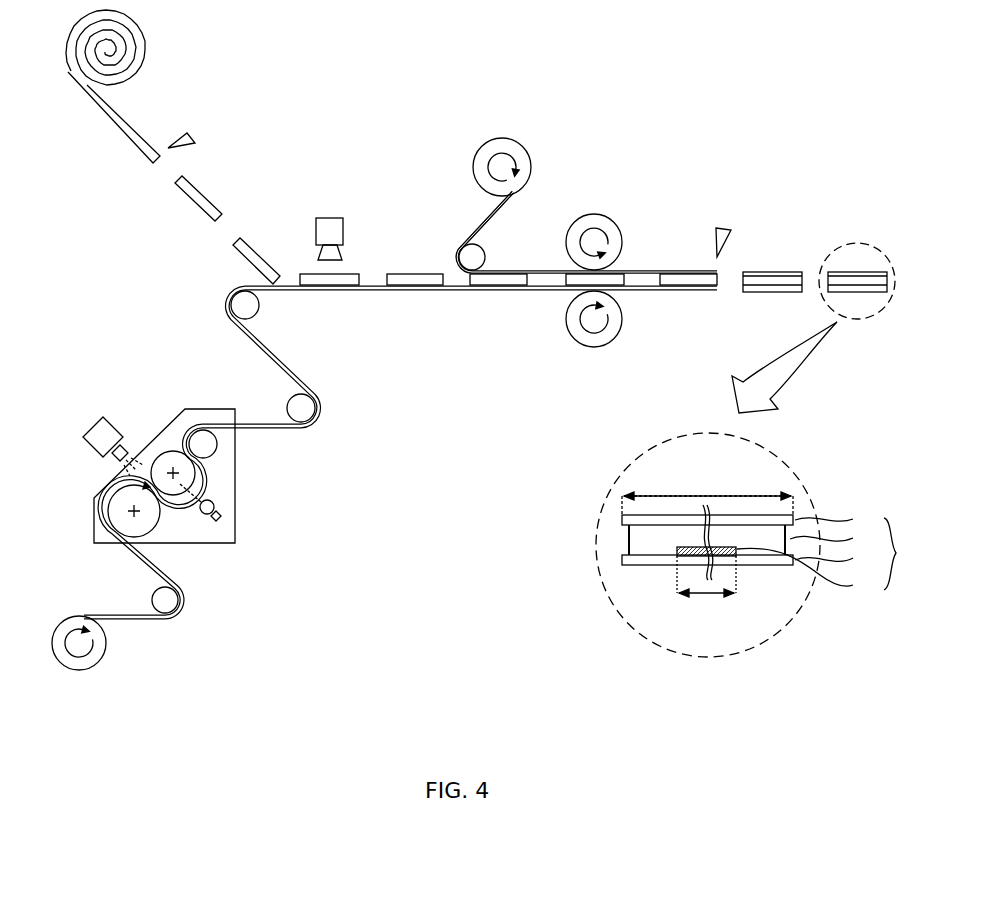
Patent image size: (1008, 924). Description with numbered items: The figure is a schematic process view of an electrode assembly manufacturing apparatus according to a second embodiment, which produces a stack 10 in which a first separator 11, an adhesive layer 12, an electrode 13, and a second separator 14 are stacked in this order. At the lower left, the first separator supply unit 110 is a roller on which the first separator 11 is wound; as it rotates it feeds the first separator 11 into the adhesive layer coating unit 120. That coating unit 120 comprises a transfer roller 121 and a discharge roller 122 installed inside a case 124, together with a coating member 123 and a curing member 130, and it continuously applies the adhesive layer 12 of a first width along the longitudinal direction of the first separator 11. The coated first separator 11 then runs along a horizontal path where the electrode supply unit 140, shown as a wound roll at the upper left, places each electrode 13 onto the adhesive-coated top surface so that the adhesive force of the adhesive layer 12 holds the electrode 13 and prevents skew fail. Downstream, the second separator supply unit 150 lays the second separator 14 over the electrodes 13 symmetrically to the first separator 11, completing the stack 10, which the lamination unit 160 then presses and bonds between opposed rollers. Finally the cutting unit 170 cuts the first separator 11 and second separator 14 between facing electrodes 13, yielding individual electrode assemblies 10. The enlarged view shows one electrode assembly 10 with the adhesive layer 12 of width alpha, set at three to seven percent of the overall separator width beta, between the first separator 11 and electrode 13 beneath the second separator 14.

The electrode assembly 10 is at (857, 271).
The first separator 11 is at (278, 357).
The adhesive layer 12 is at (225, 303).
The electrode 13 is at (200, 193).
The second separator 14 is at (483, 223).
The first separator supply unit 110 is at (106, 641).
The adhesive layer coating unit 120 is at (120, 433).
The transfer roller 121 is at (120, 506).
The discharge roller 122 is at (163, 464).
The coating member 123 is at (93, 431).
The case 124 is at (210, 409).
The curing member 130 is at (222, 514).
The electrode supply unit 140 is at (110, 50).
The second separator supply unit 150 is at (502, 138).
The lamination unit 160 is at (594, 214).
The cutting unit 170 is at (723, 227).